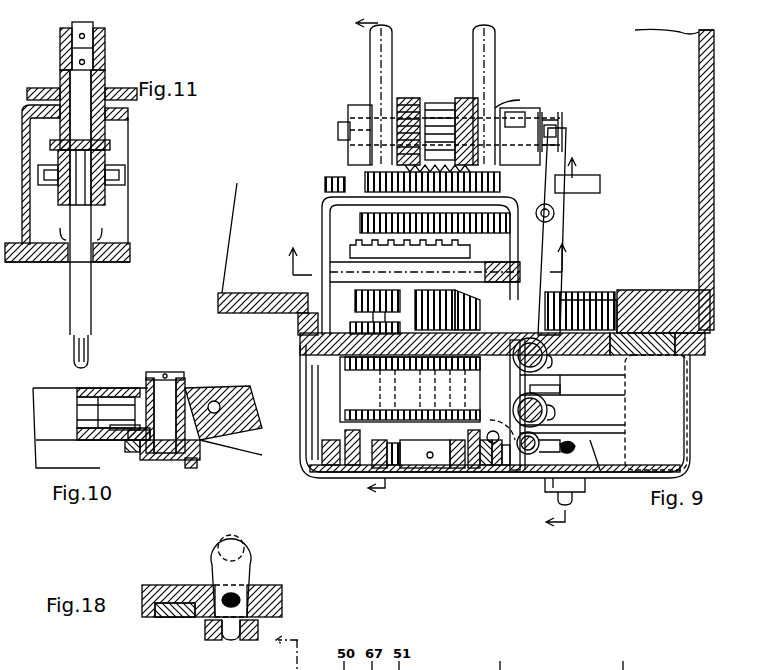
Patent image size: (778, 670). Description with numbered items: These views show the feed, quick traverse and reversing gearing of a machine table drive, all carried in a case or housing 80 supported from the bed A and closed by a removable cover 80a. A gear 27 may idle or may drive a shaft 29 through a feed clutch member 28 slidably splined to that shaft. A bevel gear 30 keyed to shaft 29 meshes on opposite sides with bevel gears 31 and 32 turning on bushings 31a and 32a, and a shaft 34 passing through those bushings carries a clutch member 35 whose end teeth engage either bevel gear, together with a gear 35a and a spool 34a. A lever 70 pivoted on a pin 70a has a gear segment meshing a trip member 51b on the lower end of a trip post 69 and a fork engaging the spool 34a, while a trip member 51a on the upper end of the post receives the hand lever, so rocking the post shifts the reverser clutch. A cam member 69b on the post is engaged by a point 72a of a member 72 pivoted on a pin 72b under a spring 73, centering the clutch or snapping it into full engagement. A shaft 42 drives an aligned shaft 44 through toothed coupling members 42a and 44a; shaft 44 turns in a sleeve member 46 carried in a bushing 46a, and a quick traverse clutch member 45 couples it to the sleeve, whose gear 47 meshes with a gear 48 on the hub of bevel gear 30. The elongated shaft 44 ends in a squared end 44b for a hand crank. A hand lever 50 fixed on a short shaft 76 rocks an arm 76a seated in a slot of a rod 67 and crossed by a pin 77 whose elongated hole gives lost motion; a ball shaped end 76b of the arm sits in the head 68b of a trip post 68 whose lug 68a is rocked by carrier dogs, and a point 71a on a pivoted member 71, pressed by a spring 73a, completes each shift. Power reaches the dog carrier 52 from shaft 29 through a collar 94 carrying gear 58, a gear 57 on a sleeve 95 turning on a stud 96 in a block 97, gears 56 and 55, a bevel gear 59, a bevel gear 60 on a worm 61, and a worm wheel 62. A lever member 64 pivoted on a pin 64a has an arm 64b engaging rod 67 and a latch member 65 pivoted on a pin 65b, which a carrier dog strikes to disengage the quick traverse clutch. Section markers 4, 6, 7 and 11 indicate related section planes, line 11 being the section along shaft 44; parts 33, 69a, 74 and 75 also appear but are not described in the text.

In FIG. 18, the section line 4 is at (293, 652).
In FIG. 9, the section line 6 is at (561, 343).
In FIG. 9, the section line 7 is at (429, 263).
In FIG. 9, the section line 11 is at (392, 490).
In FIG. 9, the gear 27 is at (365, 228).
In FIG. 9, the feed clutch member 28 is at (355, 250).
In FIG. 9, the shaft 29 is at (372, 300).
In FIG. 9, the bevel gear 30 is at (400, 172).
In FIG. 9, the bevel gear 31 is at (395, 103).
In FIG. 9, the bushing 31a is at (350, 122).
In FIG. 9, the bevel gear 32 is at (520, 113).
In FIG. 9, the bushing 32a is at (515, 115).
In FIG. 9, the gear housing 33 is at (330, 298).
In FIG. 9, the shaft 34 is at (338, 133).
In FIG. 9, the spool 34a is at (562, 125).
In FIG. 9, the clutch member 35 is at (400, 110).
In FIG. 9, the gear 35a is at (440, 103).
In FIG. 11, the shaft 42 is at (88, 27).
In FIG. 11, the toothed coupling member 42a is at (66, 36).
In FIG. 11, the shaft 44 is at (92, 296).
In FIG. 11, the toothed coupling member 44a is at (100, 55).
In FIG. 11, the squared end 44b is at (74, 345).
In FIG. 11, the quick traverse clutch member 45 is at (105, 198).
In FIG. 11, the sleeve member 46 is at (110, 147).
In FIG. 11, the bushing 46a is at (128, 114).
In FIG. 11, the gear 47 is at (46, 88).
In FIG. 9, the gear 47 is at (325, 185).
In FIG. 9, the gear 48 is at (590, 182).
In FIG. 10, the hand lever 50 is at (92, 388).
In FIG. 9, the trip member 51a is at (556, 133).
In FIG. 9, the trip member 51b is at (547, 352).
In FIG. 9, the dog carrier 52 is at (600, 470).
In FIG. 9, the gear 55 is at (486, 468).
In FIG. 9, the gear 56 is at (300, 478).
In FIG. 9, the gear 57 is at (340, 465).
In FIG. 9, the gear 58 is at (497, 468).
In FIG. 9, the bevel gear 59 is at (345, 362).
In FIG. 9, the bevel gear 60 is at (470, 300).
In FIG. 9, the worm 61 is at (580, 298).
In FIG. 9, the worm wheel 62 is at (660, 355).
In FIG. 9, the lever member 64 is at (575, 490).
In FIG. 9, the pin 64a is at (566, 505).
In FIG. 18, the arm 64b is at (168, 617).
In FIG. 9, the arm 64b is at (548, 490).
In FIG. 9, the latch member 65 is at (560, 446).
In FIG. 9, the pin 65b is at (570, 452).
In FIG. 10, the rod 67 is at (162, 460).
In FIG. 18, the rod 67 is at (270, 600).
In FIG. 9, the rod 67 is at (515, 470).
In FIG. 10, the trip post 68 is at (172, 390).
In FIG. 9, the trip post 68 is at (600, 430).
In FIG. 10, the lug 68a is at (197, 468).
In FIG. 9, the lug 68a is at (555, 413).
In FIG. 10, the head portion 68b is at (145, 455).
In FIG. 18, the head portion 68b is at (205, 630).
In FIG. 9, the head portion 68b is at (509, 408).
In FIG. 9, the trip post 69 is at (600, 378).
In FIG. 9, the link pin 69a is at (552, 362).
In FIG. 9, the cam member 69b is at (547, 383).
In FIG. 9, the lever 70 is at (560, 200).
In FIG. 9, the pin 70a is at (555, 215).
In FIG. 9, the pivoted member 71 is at (532, 470).
In FIG. 9, the point 71a is at (480, 412).
In FIG. 9, the member 72 is at (474, 468).
In FIG. 9, the point 72a is at (438, 390).
In FIG. 9, the pin 72b is at (506, 468).
In FIG. 9, the spring 73 is at (377, 390).
In FIG. 9, the spring 73a is at (395, 415).
In FIG. 9, the shaft 74 is at (501, 658).
In FIG. 9, the shaft 75 is at (624, 658).
In FIG. 10, the short shaft 76 is at (108, 424).
In FIG. 18, the short shaft 76 is at (248, 545).
In FIG. 10, the arm 76a is at (150, 372).
In FIG. 10, the ball shaped end 76b is at (130, 443).
In FIG. 18, the ball shaped end 76b is at (231, 640).
In FIG. 10, the pin 77 is at (130, 440).
In FIG. 18, the pin 77 is at (236, 595).
In FIG. 11, the housing 80 is at (24, 262).
In FIG. 10, the housing 80 is at (195, 408).
In FIG. 9, the housing 80 is at (500, 106).
In FIG. 9, the cover 80a is at (690, 465).
In FIG. 9, the collar 94 is at (458, 468).
In FIG. 9, the sleeve 95 is at (380, 468).
In FIG. 9, the stud 96 is at (372, 493).
In FIG. 9, the block 97 is at (345, 395).
In FIG. 9, the bed A is at (712, 235).